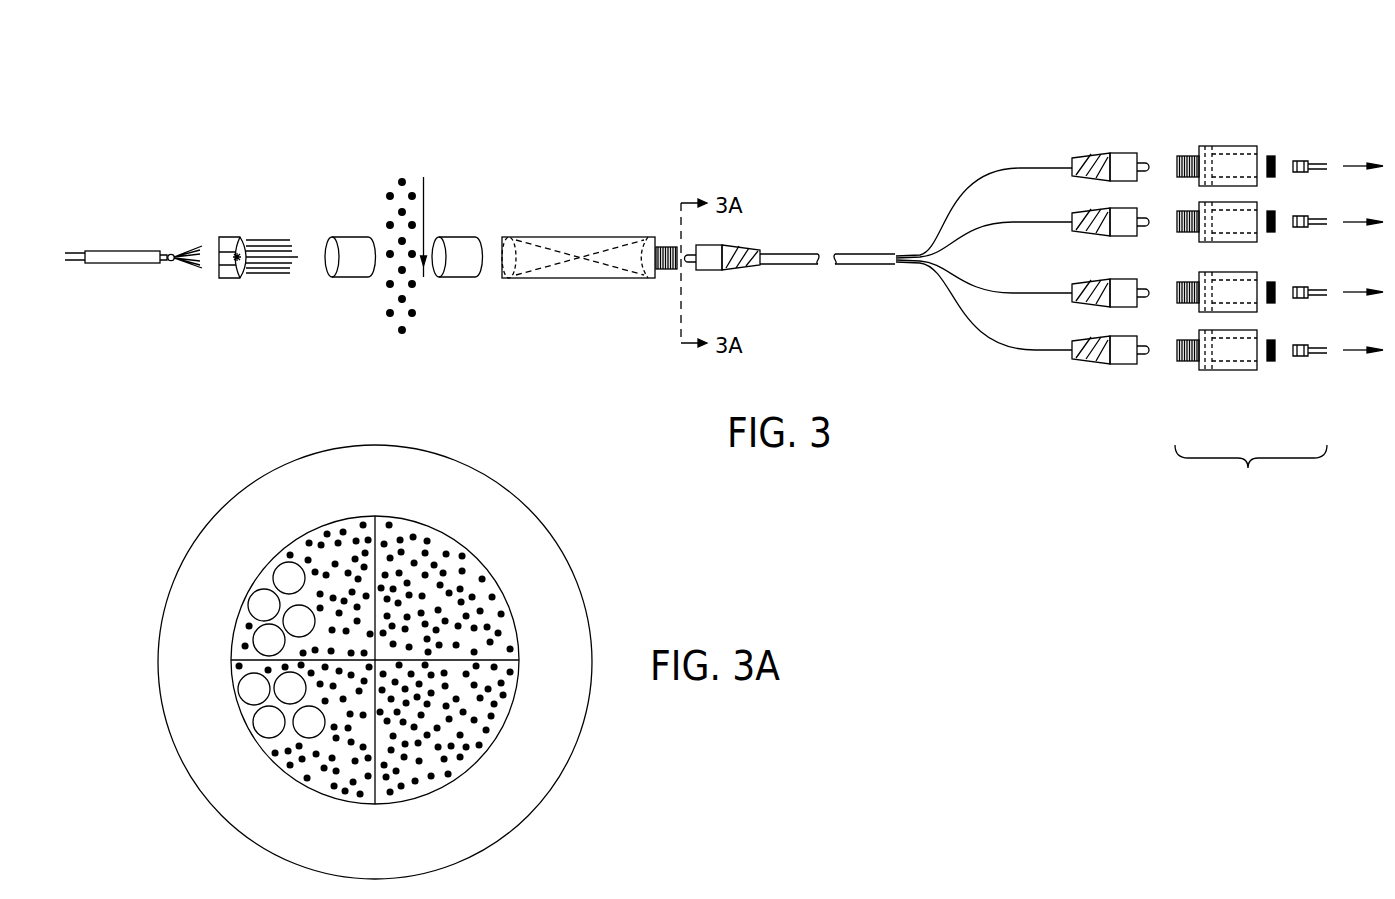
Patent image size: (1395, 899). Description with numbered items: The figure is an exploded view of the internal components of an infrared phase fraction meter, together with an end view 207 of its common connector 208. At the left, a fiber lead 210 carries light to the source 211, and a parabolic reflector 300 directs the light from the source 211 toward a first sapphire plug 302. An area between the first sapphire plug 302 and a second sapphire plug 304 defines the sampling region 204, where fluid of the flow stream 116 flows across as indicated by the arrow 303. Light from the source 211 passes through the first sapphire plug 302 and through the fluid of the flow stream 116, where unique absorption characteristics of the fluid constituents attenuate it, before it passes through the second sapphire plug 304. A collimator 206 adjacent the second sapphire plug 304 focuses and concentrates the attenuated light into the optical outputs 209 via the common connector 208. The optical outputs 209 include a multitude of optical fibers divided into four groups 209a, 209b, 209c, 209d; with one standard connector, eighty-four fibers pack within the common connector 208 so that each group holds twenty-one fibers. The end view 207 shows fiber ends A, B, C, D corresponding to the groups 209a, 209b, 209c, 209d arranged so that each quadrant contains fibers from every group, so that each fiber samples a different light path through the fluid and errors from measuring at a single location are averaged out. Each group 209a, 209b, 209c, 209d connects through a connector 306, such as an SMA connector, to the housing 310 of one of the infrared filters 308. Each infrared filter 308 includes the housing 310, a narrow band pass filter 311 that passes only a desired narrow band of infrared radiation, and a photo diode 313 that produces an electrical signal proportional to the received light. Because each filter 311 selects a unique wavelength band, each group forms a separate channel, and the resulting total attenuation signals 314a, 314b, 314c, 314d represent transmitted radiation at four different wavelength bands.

In FIG. 3, the flow stream 116 is at (401, 174).
In FIG. 3, the sampling region 204 is at (393, 277).
In FIG. 3, the collimator 206 is at (573, 237).
In FIG. 3A, the end view 207 is at (539, 738).
In FIG. 3, the common connector 208 is at (708, 272).
In FIG. 3, the optical outputs 209 is at (862, 252).
In FIG. 3, the first fiber group 209a is at (1058, 164).
In FIG. 3, the second fiber group 209b is at (1062, 220).
In FIG. 3, the third fiber group 209c is at (1063, 290).
In FIG. 3, the fourth fiber group 209d is at (1063, 347).
In FIG. 3, the optical fiber 210 is at (73, 250).
In FIG. 3, the source 211 is at (137, 250).
In FIG. 3, the parabolic reflector 300 is at (230, 237).
In FIG. 3, the first sapphire plug 302 is at (350, 237).
In FIG. 3, the arrow 303 is at (425, 202).
In FIG. 3, the second sapphire plug 304 is at (452, 277).
In FIG. 3, the connector 306 is at (1125, 153).
In FIG. 3, the infrared filters 308 is at (1251, 474).
In FIG. 3, the housing 310 is at (1222, 145).
In FIG. 3, the narrow band pass filter 311 is at (1273, 362).
In FIG. 3, the photo diode 313 is at (1302, 358).
In FIG. 3, the total attenuation signal 314a is at (1352, 166).
In FIG. 3, the total attenuation signal 314b is at (1352, 222).
In FIG. 3, the total attenuation signal 314c is at (1352, 292).
In FIG. 3, the total attenuation signal 314d is at (1352, 350).